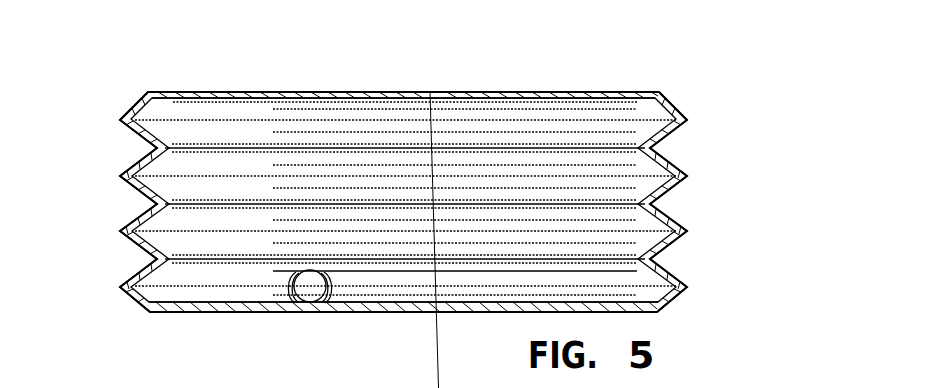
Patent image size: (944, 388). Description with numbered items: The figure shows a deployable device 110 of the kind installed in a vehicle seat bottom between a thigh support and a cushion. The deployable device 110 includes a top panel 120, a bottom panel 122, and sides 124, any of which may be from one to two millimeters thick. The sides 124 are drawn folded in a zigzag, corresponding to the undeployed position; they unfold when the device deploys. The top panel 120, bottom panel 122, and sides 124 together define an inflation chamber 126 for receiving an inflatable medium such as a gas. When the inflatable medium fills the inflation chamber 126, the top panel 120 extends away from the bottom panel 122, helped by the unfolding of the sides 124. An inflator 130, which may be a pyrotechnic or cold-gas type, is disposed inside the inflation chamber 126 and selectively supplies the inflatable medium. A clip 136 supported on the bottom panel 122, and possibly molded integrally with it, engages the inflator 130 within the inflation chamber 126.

The first deployable device 110 is at (481, 81).
The top panel 120 is at (285, 92).
The bottom panel 122 is at (187, 313).
The sides 124 is at (131, 190).
The inflation chamber 126 is at (634, 242).
The inflator 130 is at (313, 293).
The clip 136 is at (288, 290).